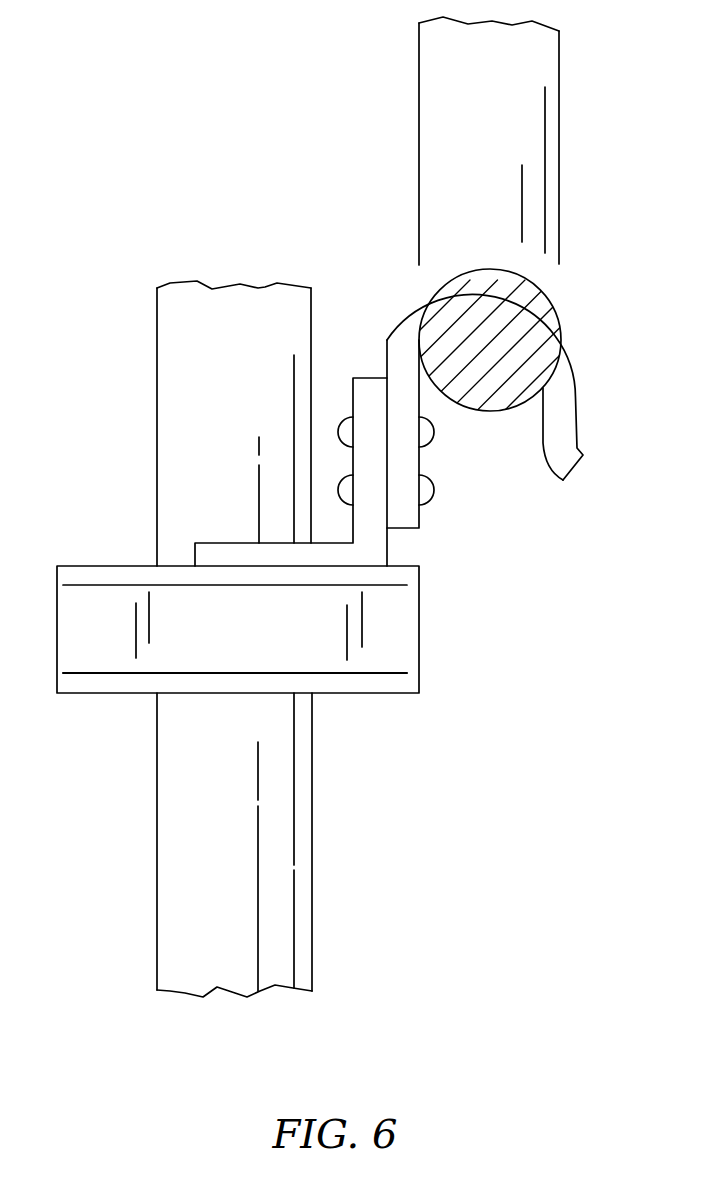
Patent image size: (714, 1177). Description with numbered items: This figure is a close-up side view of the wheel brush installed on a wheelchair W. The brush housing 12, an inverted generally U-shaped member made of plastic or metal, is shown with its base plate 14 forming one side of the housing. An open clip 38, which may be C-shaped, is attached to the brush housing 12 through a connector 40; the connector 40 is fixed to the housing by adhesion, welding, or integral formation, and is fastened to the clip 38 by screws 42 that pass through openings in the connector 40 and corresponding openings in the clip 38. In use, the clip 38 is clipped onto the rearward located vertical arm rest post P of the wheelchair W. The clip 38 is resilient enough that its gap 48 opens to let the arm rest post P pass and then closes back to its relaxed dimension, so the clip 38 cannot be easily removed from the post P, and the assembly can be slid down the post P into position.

The wheelchair W is at (192, 313).
The arm rest post P is at (517, 322).
The brush housing 12 is at (345, 395).
The base plate 14 is at (375, 639).
The clip 38 is at (568, 438).
The connector 40 is at (213, 558).
The screws 42 is at (345, 425).
The gap 48 is at (486, 437).